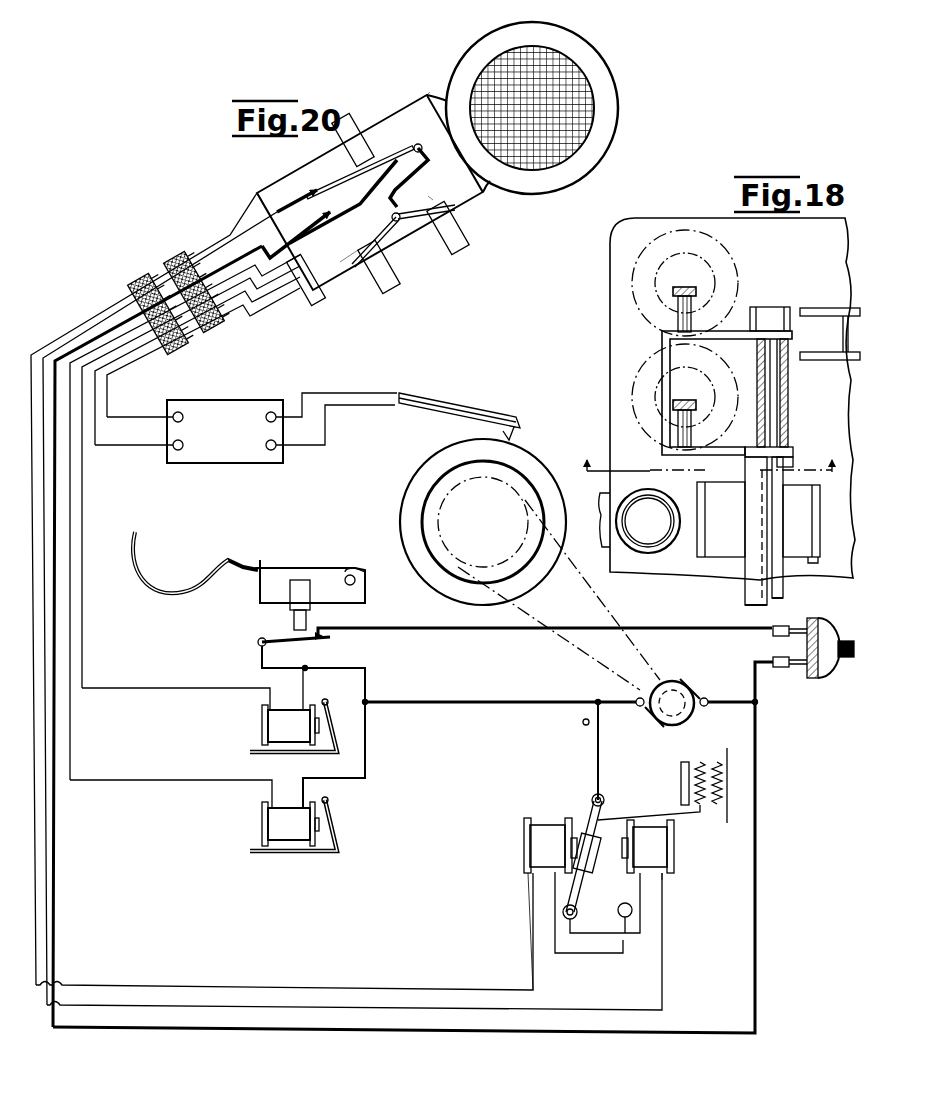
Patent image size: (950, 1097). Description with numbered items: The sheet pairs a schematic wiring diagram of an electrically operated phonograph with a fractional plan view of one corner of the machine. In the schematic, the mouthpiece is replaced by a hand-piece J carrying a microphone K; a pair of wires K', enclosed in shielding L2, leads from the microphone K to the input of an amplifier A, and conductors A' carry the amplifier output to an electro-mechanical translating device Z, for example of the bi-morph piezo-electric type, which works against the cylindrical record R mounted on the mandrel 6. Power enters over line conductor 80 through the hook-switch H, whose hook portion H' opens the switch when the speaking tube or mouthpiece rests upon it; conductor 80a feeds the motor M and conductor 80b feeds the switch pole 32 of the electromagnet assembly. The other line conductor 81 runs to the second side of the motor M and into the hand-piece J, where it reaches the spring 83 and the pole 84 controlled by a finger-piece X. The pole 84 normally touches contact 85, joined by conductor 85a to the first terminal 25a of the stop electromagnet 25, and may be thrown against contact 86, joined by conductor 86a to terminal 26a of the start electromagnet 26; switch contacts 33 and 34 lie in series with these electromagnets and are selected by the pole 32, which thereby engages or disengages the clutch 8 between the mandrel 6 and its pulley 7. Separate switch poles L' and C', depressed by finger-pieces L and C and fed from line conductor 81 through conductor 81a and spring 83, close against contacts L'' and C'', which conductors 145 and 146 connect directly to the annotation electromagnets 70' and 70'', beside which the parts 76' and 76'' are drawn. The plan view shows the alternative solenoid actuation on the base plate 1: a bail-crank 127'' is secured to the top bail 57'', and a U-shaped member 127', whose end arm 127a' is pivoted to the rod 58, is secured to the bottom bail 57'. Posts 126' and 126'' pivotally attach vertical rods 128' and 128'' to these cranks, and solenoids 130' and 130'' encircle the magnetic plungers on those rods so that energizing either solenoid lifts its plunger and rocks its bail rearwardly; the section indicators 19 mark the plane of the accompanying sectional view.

In FIG. 20, the microphone K is at (540, 108).
In FIG. 20, the hand-piece J is at (440, 88).
In FIG. 20, the finger-piece X is at (362, 126).
In FIG. 20, the finger-piece L is at (379, 273).
In FIG. 20, the finger-piece C is at (448, 235).
In FIG. 20, the conductor 85a is at (88, 318).
In FIG. 20, the contact 85 is at (292, 203).
In FIG. 20, the conductor 86a is at (122, 316).
In FIG. 20, the contact 86 is at (297, 232).
In FIG. 20, the line conductor 81 is at (230, 235).
In FIG. 20, the conductor 146 is at (177, 780).
In FIG. 20, the conductor 145 is at (164, 688).
In FIG. 20, the pair of wires K' is at (216, 293).
In FIG. 20, the shielding L2 is at (175, 340).
In FIG. 20, the switch pole 84 is at (364, 171).
In FIG. 20, the conductor 81a is at (428, 160).
In FIG. 20, the spring 83 is at (366, 194).
In FIG. 20, the contact C'' is at (448, 191).
In FIG. 20, the switch pole L' is at (387, 246).
In FIG. 20, the switch pole C' is at (426, 249).
In FIG. 20, the contact L'' is at (342, 255).
In FIG. 20, the amplifier A is at (225, 416).
In FIG. 20, the conductors A' is at (336, 404).
In FIG. 20, the electro-mechanical translating device Z is at (470, 407).
In FIG. 20, the record R is at (418, 487).
In FIG. 20, the mandrel 6 is at (440, 517).
In FIG. 20, the hook portion H' is at (249, 581).
In FIG. 20, the hook-switch H is at (314, 666).
In FIG. 18, the hook-switch H is at (718, 544).
In FIG. 20, the line conductor 80 is at (418, 628).
In FIG. 20, the conductor 80a is at (460, 702).
In FIG. 20, the conductor 80b is at (596, 735).
In FIG. 20, the electromagnet 70' is at (275, 706).
In FIG. 20, the relay armature 76' is at (281, 726).
In FIG. 20, the electromagnet 70'' is at (297, 774).
In FIG. 20, the relay armature 76'' is at (276, 828).
In FIG. 20, the motor M is at (693, 712).
In FIG. 20, the clutch 8 is at (707, 812).
In FIG. 20, the switch pole 32 is at (583, 876).
In FIG. 20, the switch contact 34 is at (577, 916).
In FIG. 20, the switch contact 33 is at (618, 907).
In FIG. 20, the stop electromagnet 25 is at (545, 825).
In FIG. 20, the first terminal 25a is at (530, 870).
In FIG. 20, the start electromagnet 26 is at (674, 850).
In FIG. 20, the first terminal 26a is at (670, 872).
In FIG. 18, the base plate 1 is at (703, 222).
In FIG. 18, the solenoid 130' is at (649, 269).
In FIG. 18, the vertical rod 128' is at (622, 270).
In FIG. 18, the post 126' is at (622, 311).
In FIG. 18, the U-shaped member 127' is at (676, 393).
In FIG. 18, the bail-crank 127a' is at (762, 296).
In FIG. 18, the pulley 7 is at (818, 310).
In FIG. 18, the solenoid 130'' is at (647, 397).
In FIG. 18, the vertical rod 128'' is at (704, 340).
In FIG. 18, the post 126'' is at (623, 416).
In FIG. 18, the rod 58 is at (788, 383).
In FIG. 18, the bail-crank 127'' is at (786, 447).
In FIG. 18, the section line 19 is at (713, 454).
In FIG. 18, the top bail 57'' is at (739, 608).
In FIG. 18, the bottom bail 57' is at (793, 605).